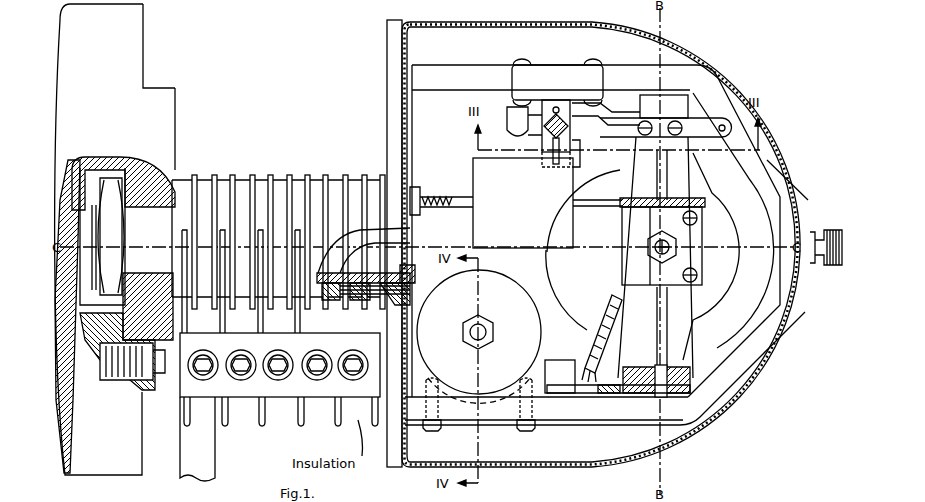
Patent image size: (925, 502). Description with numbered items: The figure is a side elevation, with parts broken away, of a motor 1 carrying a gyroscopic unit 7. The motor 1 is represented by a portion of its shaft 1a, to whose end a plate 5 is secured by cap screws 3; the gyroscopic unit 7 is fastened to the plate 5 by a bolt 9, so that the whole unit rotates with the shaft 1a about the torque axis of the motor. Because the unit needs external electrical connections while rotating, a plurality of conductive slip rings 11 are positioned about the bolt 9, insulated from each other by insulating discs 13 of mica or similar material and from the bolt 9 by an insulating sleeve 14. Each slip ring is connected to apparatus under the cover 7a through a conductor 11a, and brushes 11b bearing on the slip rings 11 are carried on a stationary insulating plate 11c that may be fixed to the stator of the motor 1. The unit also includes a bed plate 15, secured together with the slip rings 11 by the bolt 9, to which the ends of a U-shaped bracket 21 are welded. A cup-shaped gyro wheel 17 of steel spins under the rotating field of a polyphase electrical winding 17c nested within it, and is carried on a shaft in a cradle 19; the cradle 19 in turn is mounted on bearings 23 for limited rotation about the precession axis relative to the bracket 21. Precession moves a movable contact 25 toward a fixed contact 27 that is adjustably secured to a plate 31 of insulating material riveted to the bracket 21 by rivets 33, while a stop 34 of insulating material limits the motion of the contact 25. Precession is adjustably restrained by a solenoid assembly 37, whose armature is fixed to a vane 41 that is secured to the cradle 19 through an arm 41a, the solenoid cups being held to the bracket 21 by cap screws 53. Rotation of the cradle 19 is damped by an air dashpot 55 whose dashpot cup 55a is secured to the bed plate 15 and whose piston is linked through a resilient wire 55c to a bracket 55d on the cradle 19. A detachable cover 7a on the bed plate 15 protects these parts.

The motor 1 is at (167, 30).
The shaft 1a is at (140, 67).
The cap screws 3 is at (162, 380).
The plate 5 is at (168, 145).
The gyroscopic unit 7 is at (370, 133).
The cover 7a is at (532, 22).
The bolt 9 is at (175, 185).
The slip rings 11 is at (222, 175).
The conductor 11a is at (412, 295).
The brushes 11b is at (300, 428).
The insulating plate 11c is at (324, 405).
The insulating discs 13 is at (282, 175).
The insulating sleeve 14 is at (368, 273).
The bed plate 15 is at (386, 80).
The gyro wheel 17 is at (558, 272).
The polyphase electrical winding 17c is at (600, 308).
The cradle 19 is at (693, 300).
The U-shaped bracket 21 is at (748, 372).
The bearings 23 is at (686, 380).
The movable contact 25 is at (636, 125).
The fixed contact 27 is at (558, 108).
The plate of insulating material 31 is at (548, 90).
The rivets 33 is at (530, 60).
The stop 34 is at (512, 128).
The solenoid assembly 37 is at (487, 276).
The vane 41 is at (568, 365).
The arm 41a is at (610, 388).
The cap screws 53 is at (430, 432).
The air dashpot 55 is at (470, 170).
The dashpot cup 55a is at (473, 212).
The resilient wire 55c is at (600, 207).
The bracket 55d is at (658, 199).